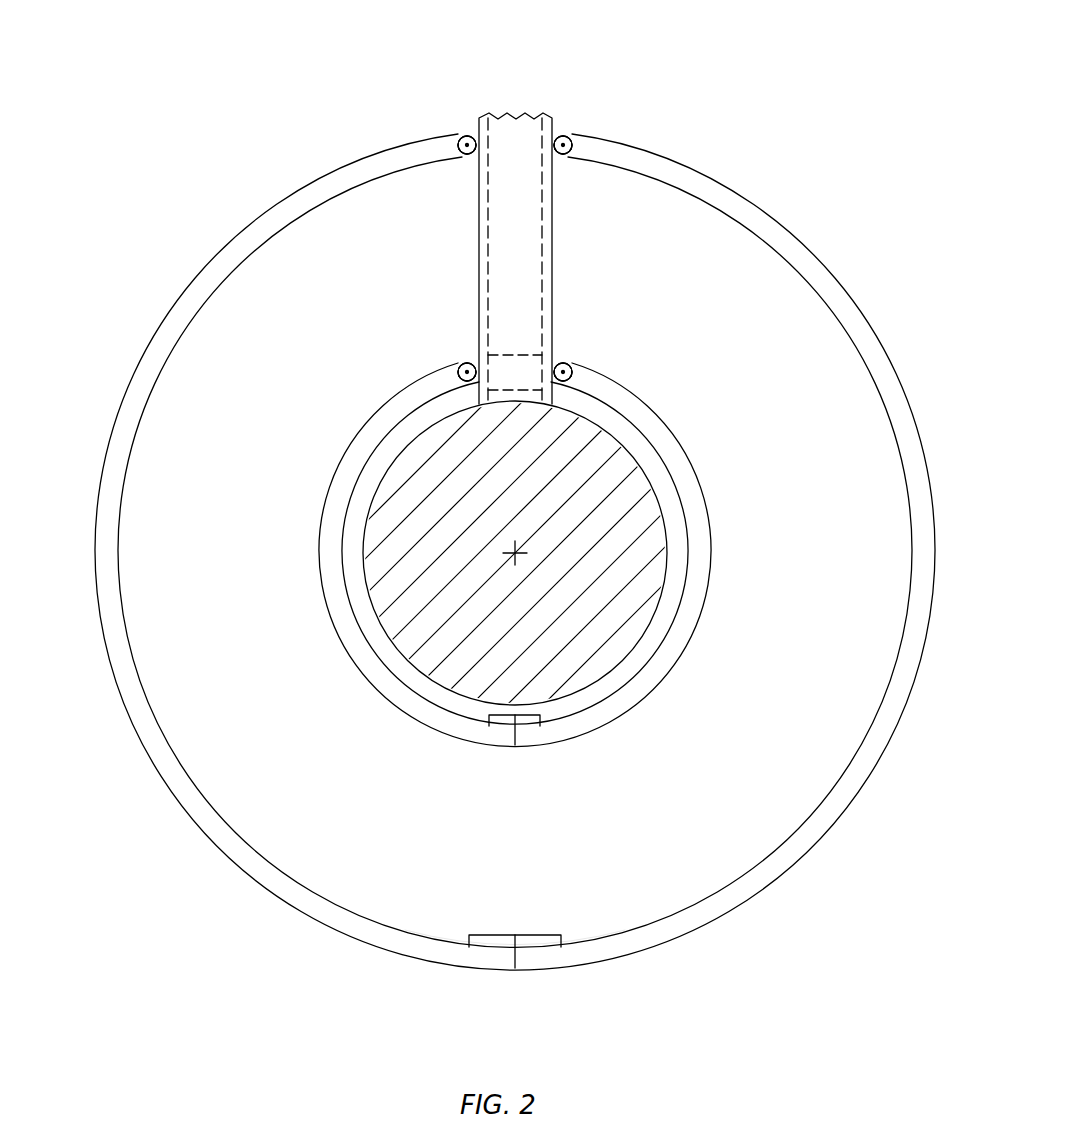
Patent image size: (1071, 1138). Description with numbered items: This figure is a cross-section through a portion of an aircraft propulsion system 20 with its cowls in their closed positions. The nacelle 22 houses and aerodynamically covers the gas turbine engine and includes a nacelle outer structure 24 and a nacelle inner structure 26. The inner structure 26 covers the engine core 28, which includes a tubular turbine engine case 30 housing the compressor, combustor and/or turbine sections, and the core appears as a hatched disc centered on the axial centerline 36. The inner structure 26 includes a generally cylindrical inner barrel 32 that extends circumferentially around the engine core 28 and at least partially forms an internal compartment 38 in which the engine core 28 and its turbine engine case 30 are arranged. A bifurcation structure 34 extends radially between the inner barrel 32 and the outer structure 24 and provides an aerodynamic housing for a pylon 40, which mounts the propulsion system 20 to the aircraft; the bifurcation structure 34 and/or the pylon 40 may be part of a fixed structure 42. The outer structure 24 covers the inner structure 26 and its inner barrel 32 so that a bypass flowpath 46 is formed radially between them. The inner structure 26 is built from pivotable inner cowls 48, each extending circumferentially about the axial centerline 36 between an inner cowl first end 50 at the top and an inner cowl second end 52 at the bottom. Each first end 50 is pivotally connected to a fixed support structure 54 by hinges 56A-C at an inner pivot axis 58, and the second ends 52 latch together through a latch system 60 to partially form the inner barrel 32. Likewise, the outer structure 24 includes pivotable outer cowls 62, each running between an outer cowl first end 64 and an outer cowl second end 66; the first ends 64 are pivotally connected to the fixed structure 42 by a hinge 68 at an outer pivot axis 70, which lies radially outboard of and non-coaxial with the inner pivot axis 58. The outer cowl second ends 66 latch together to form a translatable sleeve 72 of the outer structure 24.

The aircraft propulsion system 20 is at (765, 80).
The nacelle 22 is at (517, 565).
The nacelle outer structure 24 is at (805, 245).
The nacelle inner structure 26 is at (551, 560).
The inner barrel 32 is at (544, 566).
The engine core 28 is at (534, 534).
The turbine engine case 30 is at (668, 563).
The bifurcation structure 34 is at (523, 210).
The axial centerline 36 is at (520, 570).
The internal compartment 38 is at (663, 620).
The pylon 40 is at (488, 226).
The fixed structure 42 is at (513, 104).
The bypass flowpath 46 is at (532, 877).
The inner cowl 48 is at (388, 705).
The inner cowl first end 50 is at (467, 364).
The inner cowl second end 52 is at (484, 764).
The fixed support structure 54 is at (514, 355).
The hinges 56A-C is at (462, 365).
The inner pivot axis 58 is at (458, 378).
The latch system 60 is at (486, 720).
The outer cowl 62 is at (137, 365).
The outer cowl first end 64 is at (468, 136).
The outer cowl second end 66 is at (513, 955).
The hinge 68 is at (471, 154).
The outer pivot axis 70 is at (458, 145).
The translatable sleeve 72 is at (722, 925).